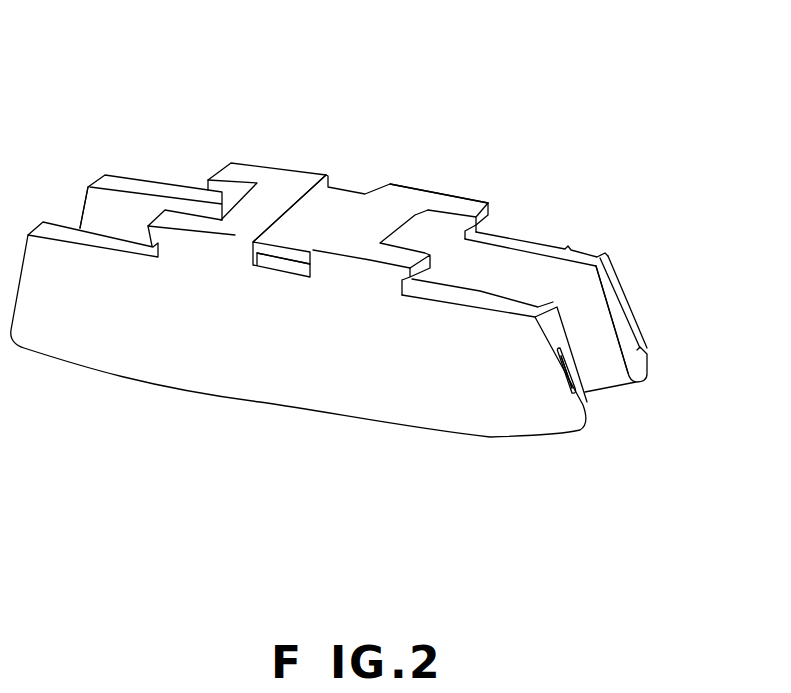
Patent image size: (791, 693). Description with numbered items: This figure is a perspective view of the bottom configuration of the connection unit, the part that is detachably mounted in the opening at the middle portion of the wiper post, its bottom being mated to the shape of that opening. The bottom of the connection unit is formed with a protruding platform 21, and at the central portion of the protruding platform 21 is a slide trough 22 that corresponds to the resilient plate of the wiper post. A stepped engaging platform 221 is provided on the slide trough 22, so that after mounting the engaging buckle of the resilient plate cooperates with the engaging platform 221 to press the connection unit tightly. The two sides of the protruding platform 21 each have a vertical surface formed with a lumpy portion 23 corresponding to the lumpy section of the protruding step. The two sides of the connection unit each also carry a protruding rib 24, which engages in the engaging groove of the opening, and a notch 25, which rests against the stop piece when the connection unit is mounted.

The protruding platform 21 is at (400, 203).
The slide trough 22 is at (307, 227).
The stepped engaging platform 221 is at (288, 262).
The lumpy portion 23 is at (148, 242).
The protruding rib 24 is at (568, 374).
The notch 25 is at (625, 316).